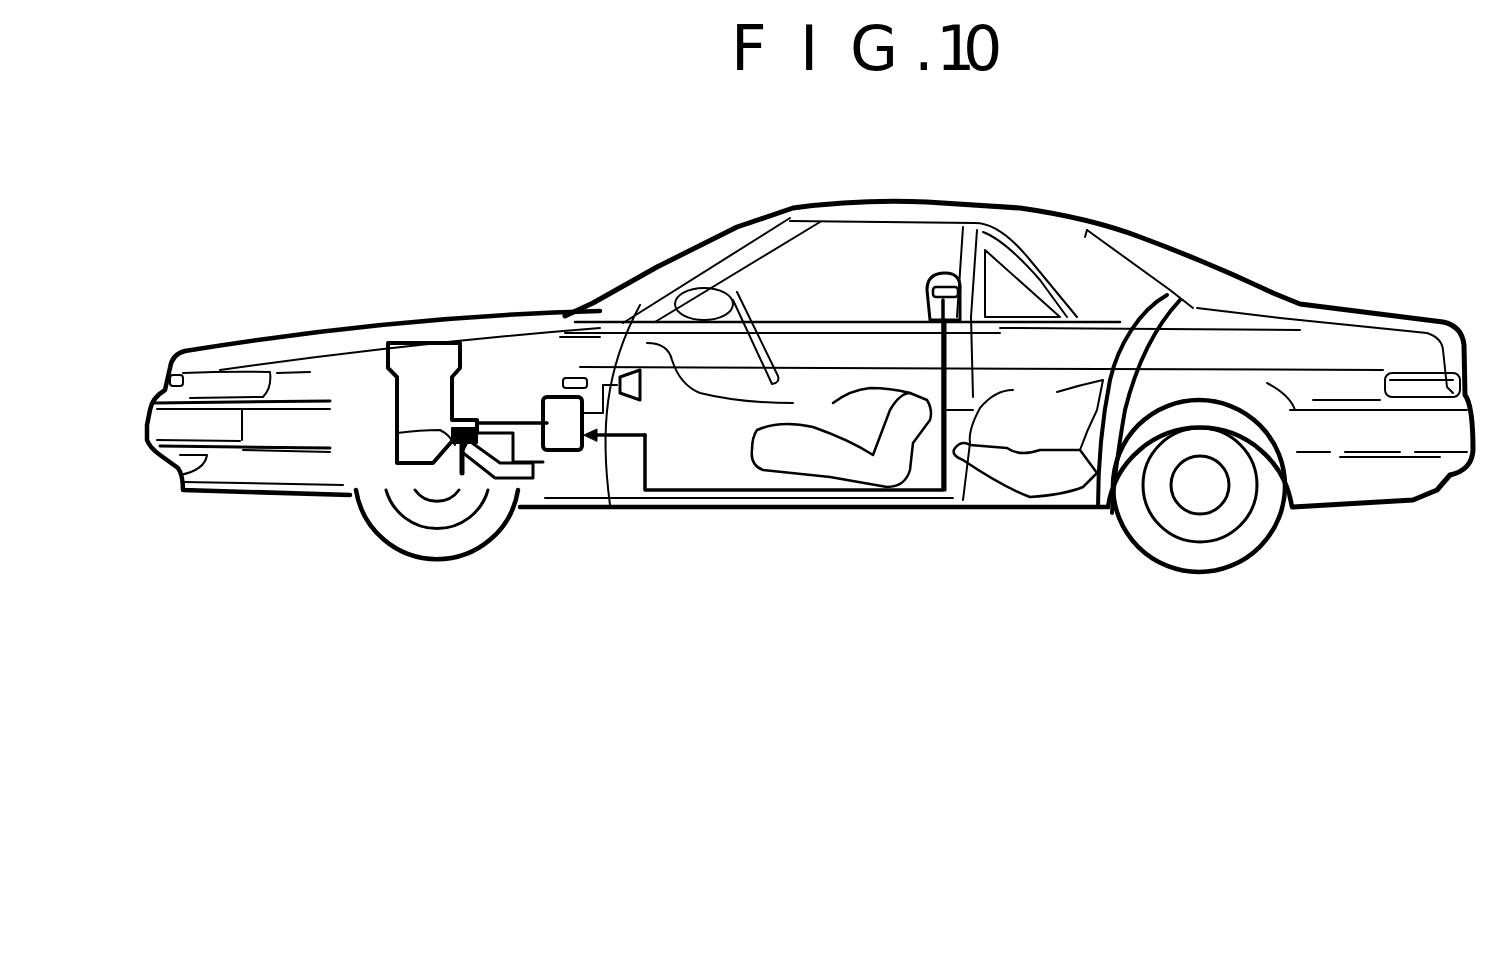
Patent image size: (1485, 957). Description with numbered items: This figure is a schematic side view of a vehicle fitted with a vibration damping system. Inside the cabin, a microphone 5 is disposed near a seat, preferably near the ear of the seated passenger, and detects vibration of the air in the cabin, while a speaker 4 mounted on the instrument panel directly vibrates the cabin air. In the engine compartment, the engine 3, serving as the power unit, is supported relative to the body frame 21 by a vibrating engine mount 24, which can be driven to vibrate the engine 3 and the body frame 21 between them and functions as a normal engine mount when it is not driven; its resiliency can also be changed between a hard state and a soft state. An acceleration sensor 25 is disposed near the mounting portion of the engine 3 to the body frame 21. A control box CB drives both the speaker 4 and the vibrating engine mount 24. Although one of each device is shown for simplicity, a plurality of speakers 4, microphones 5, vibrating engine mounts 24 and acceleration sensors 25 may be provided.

The engine 3 is at (425, 367).
The speaker 4 is at (635, 370).
The microphone 5 is at (952, 272).
The body frame 21 is at (505, 510).
The vibrating engine mount 24 is at (397, 426).
The acceleration sensor 25 is at (427, 487).
The control box CB is at (575, 440).